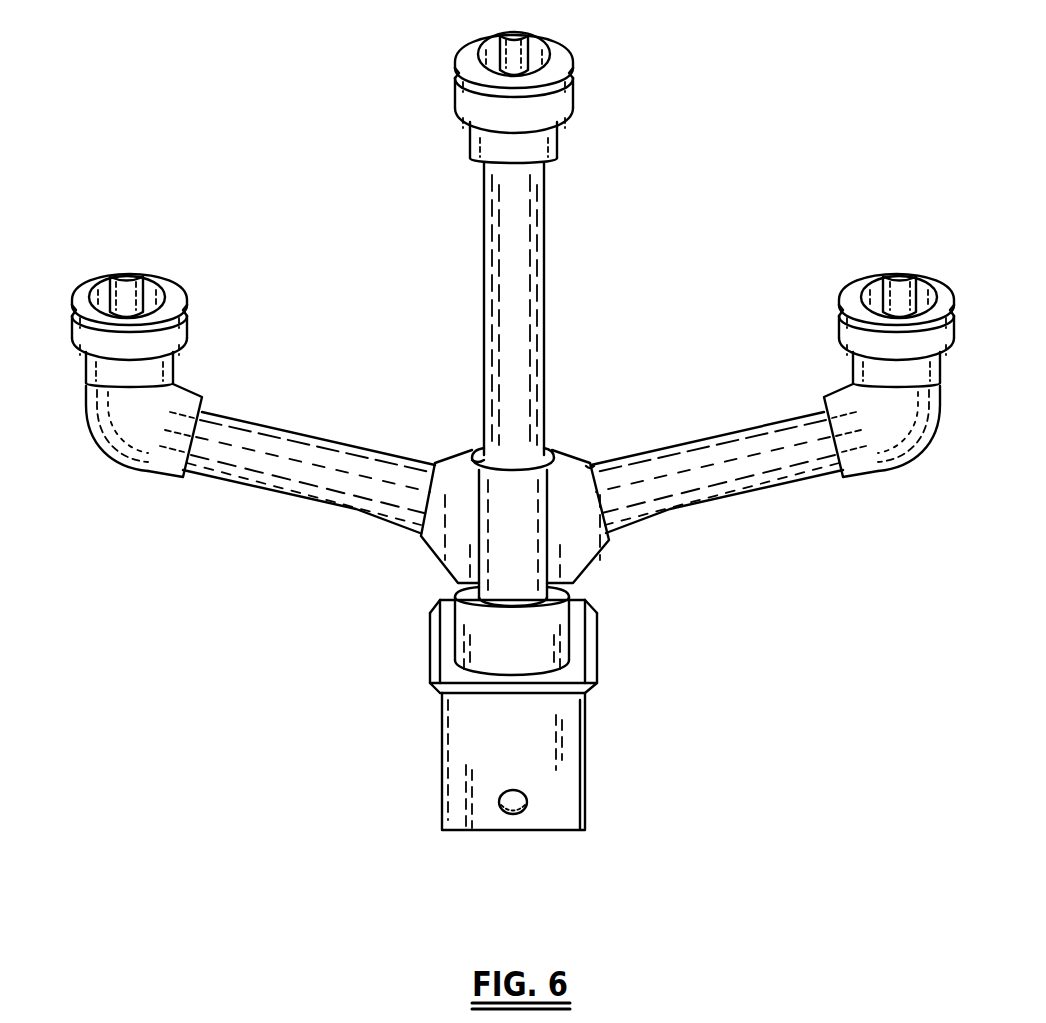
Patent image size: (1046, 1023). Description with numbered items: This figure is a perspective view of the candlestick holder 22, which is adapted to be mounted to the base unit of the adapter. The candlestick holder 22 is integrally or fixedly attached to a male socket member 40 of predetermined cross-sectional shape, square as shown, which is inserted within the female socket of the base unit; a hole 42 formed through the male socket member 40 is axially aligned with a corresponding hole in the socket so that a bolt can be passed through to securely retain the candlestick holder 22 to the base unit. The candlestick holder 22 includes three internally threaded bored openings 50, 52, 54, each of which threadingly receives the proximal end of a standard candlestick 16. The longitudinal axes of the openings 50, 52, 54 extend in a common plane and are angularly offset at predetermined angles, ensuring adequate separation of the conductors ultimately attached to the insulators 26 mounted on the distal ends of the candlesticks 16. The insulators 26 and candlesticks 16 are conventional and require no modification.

The candlestick 16 is at (490, 277).
The candlestick holder 22 is at (711, 258).
The insulator 26 is at (573, 85).
The male socket member 40 is at (570, 780).
The hole 42 is at (515, 815).
The bored opening 50 is at (410, 543).
The bored opening 52 is at (474, 436).
The bored opening 54 is at (600, 450).